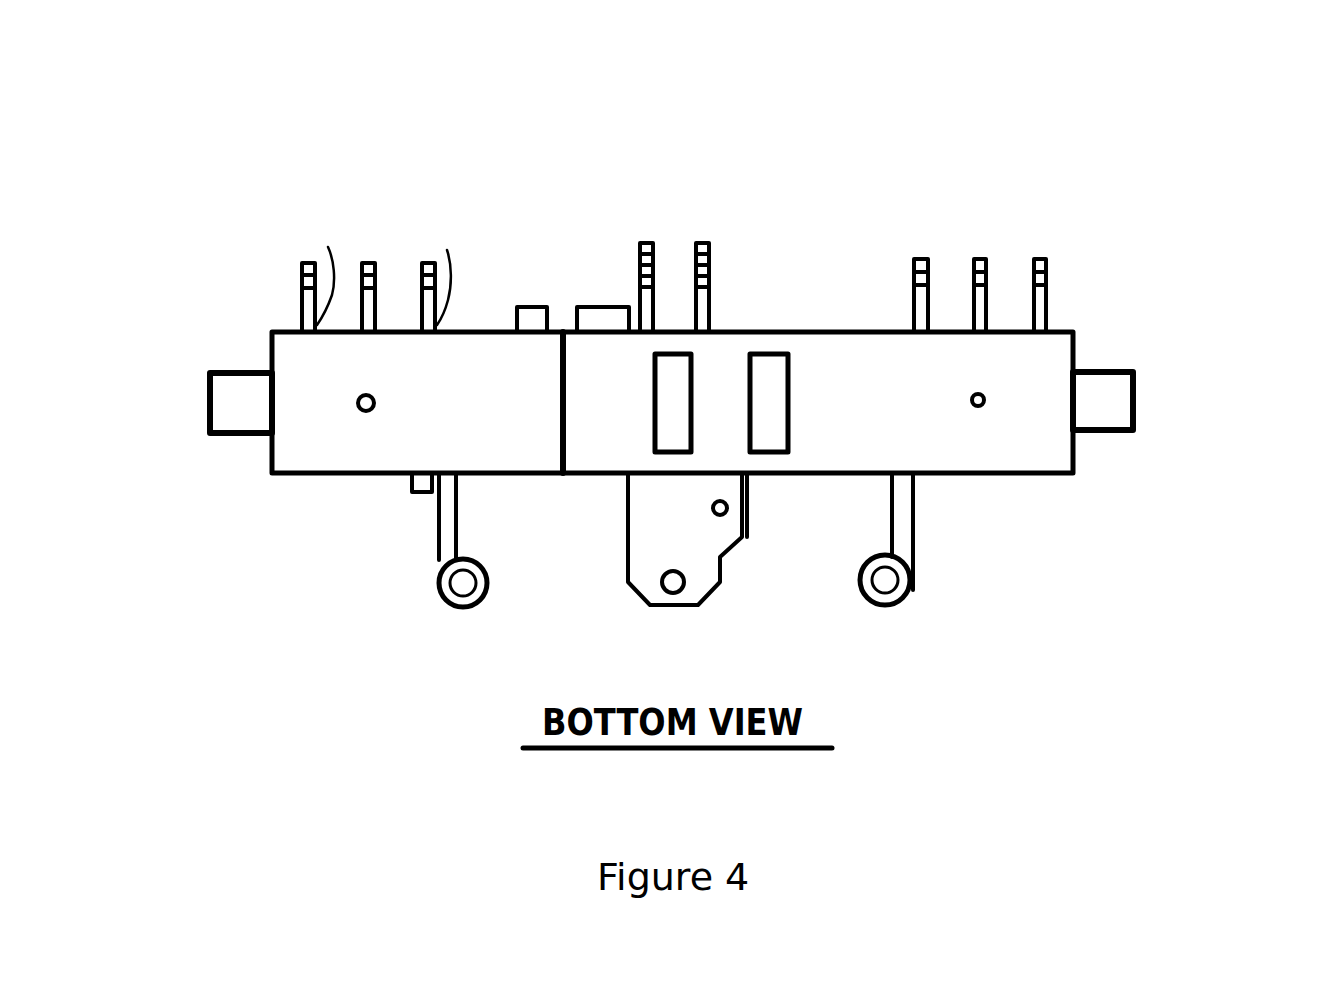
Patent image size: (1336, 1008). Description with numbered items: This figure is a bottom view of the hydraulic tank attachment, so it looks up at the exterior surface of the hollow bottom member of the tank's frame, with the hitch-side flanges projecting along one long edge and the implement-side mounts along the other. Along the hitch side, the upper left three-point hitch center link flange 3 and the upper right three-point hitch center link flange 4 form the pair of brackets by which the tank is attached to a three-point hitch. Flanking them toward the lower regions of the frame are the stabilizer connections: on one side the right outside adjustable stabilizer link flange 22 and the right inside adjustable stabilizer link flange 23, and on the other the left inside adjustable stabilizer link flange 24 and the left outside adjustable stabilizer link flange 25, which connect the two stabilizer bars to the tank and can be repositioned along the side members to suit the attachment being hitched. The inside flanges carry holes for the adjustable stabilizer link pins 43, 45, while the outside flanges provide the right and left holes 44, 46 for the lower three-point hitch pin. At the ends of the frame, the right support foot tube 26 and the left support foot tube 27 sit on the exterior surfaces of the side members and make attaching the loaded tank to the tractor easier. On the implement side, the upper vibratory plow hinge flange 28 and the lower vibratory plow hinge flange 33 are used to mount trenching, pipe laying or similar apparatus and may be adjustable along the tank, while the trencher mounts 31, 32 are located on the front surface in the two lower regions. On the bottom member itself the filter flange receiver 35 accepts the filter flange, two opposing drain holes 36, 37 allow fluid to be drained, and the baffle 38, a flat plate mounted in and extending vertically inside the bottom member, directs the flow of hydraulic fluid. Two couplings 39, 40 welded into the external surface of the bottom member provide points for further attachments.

The upper left three-point hitch center link flange 3 is at (642, 265).
The upper right three-point hitch center link flange 4 is at (707, 265).
The right outside adjustable stabilizer link flange 22 is at (380, 250).
The right inside adjustable stabilizer link flange 23 is at (447, 250).
The left inside adjustable stabilizer link flange 24 is at (987, 263).
The left outside adjustable stabilizer link flange 25 is at (1034, 300).
The right support foot tube 26 is at (1103, 430).
The left support foot tube 27 is at (213, 432).
The upper vibratory plow hinge flange 28 is at (763, 510).
The trencher mount 31 is at (437, 577).
The trencher mount 32 is at (897, 595).
The lower vibratory plow hinge flange 33 is at (673, 620).
The filter flange receiver 35 is at (762, 402).
The drain hole 36 is at (384, 417).
The drain hole 37 is at (979, 381).
The baffle 38 is at (550, 431).
The coupling 39 is at (528, 300).
The coupling 40 is at (603, 300).
The adjustable stabilizer link pin 43 is at (380, 325).
The right hole for lower three point hitch pin 44 is at (293, 268).
The adjustable stabilizer link pin 45 is at (912, 292).
The left hole for lower three point hitch pin 46 is at (1048, 297).